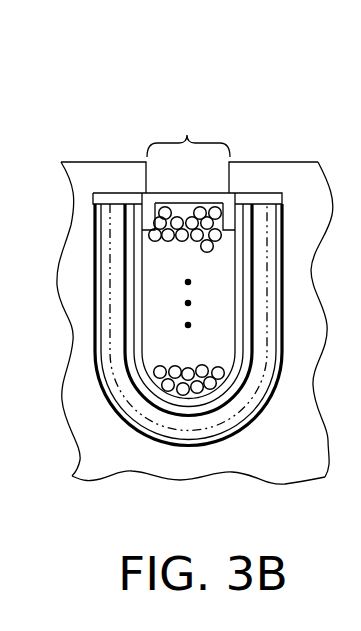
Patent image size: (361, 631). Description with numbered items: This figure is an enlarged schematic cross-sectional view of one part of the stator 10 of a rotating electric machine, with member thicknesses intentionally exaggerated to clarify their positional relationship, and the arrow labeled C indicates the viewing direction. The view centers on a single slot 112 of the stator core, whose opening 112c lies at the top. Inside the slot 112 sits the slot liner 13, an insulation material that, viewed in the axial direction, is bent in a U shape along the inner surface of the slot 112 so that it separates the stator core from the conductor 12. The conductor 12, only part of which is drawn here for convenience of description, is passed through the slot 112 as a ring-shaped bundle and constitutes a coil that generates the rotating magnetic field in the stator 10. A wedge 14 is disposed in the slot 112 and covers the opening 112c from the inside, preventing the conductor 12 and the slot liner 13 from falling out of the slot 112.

The stator 10 is at (58, 97).
The slot 112 is at (117, 200).
The opening 112c is at (188, 135).
The wedge 14 is at (208, 200).
The conductor 12 is at (207, 264).
The slot liner 13 is at (115, 413).
The direction C is at (189, 97).